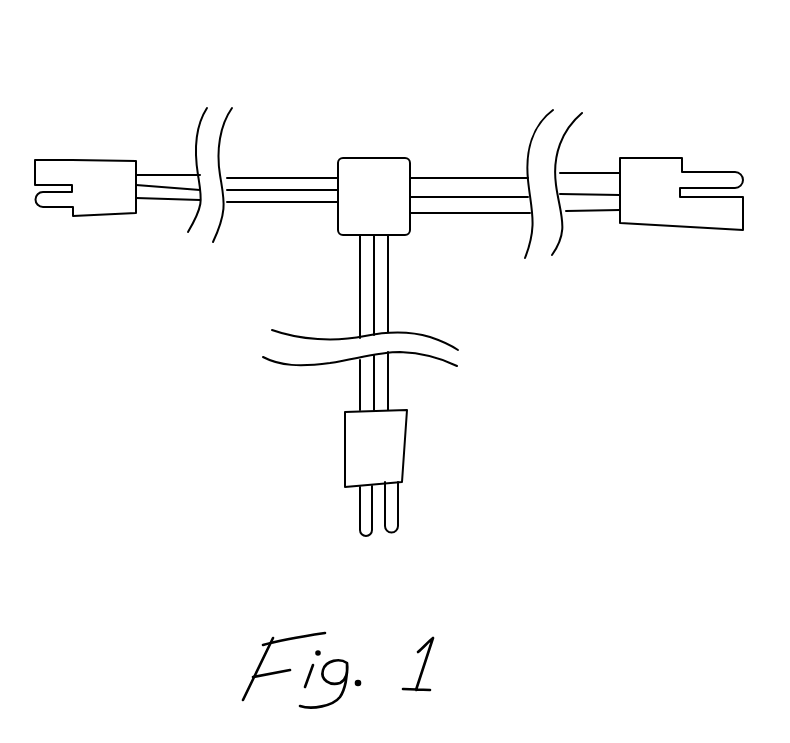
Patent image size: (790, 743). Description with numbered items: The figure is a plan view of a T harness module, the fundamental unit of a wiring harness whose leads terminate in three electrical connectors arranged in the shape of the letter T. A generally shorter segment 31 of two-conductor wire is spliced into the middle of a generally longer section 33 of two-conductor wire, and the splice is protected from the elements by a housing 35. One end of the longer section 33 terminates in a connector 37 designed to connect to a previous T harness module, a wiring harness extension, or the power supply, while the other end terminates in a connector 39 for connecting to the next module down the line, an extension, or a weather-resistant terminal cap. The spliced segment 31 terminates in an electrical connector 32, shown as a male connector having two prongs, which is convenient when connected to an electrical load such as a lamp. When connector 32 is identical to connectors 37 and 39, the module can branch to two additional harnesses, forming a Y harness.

The segment of two-conductor wire 31 is at (377, 307).
The electrical connector 32 is at (395, 447).
The section of two-conductor wire 33 is at (275, 178).
The housing 35 is at (372, 178).
The connector 37 is at (100, 168).
The connector 39 is at (643, 173).